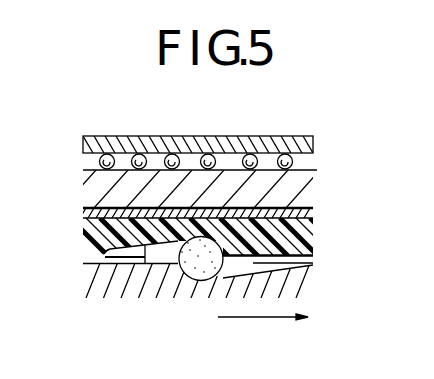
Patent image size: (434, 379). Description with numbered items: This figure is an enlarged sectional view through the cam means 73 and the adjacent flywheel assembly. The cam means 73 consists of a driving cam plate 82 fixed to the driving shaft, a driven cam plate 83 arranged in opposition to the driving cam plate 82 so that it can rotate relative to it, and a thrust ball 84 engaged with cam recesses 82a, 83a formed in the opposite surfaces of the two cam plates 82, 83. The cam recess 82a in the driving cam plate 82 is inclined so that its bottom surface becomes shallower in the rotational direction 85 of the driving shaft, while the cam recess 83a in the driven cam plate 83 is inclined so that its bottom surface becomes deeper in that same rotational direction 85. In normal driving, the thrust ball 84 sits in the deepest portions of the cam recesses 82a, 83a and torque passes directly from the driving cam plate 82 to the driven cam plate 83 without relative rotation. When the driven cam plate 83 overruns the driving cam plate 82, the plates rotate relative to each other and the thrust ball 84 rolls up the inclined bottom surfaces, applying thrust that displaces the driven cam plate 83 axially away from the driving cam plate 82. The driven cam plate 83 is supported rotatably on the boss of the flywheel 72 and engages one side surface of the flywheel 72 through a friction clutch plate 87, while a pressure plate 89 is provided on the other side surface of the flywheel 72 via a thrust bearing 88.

The flywheel 72 is at (307, 190).
The cam means 73 is at (328, 245).
The driving cam plate 82 is at (90, 278).
The cam recess 82a is at (286, 273).
The driven cam plate 83 is at (90, 229).
The cam recess 83a is at (145, 270).
The thrust ball 84 is at (193, 283).
The rotational direction 85 is at (262, 318).
The friction clutch plate 87 is at (312, 213).
The thrust bearing 88 is at (288, 151).
The pressure plate 89 is at (238, 141).